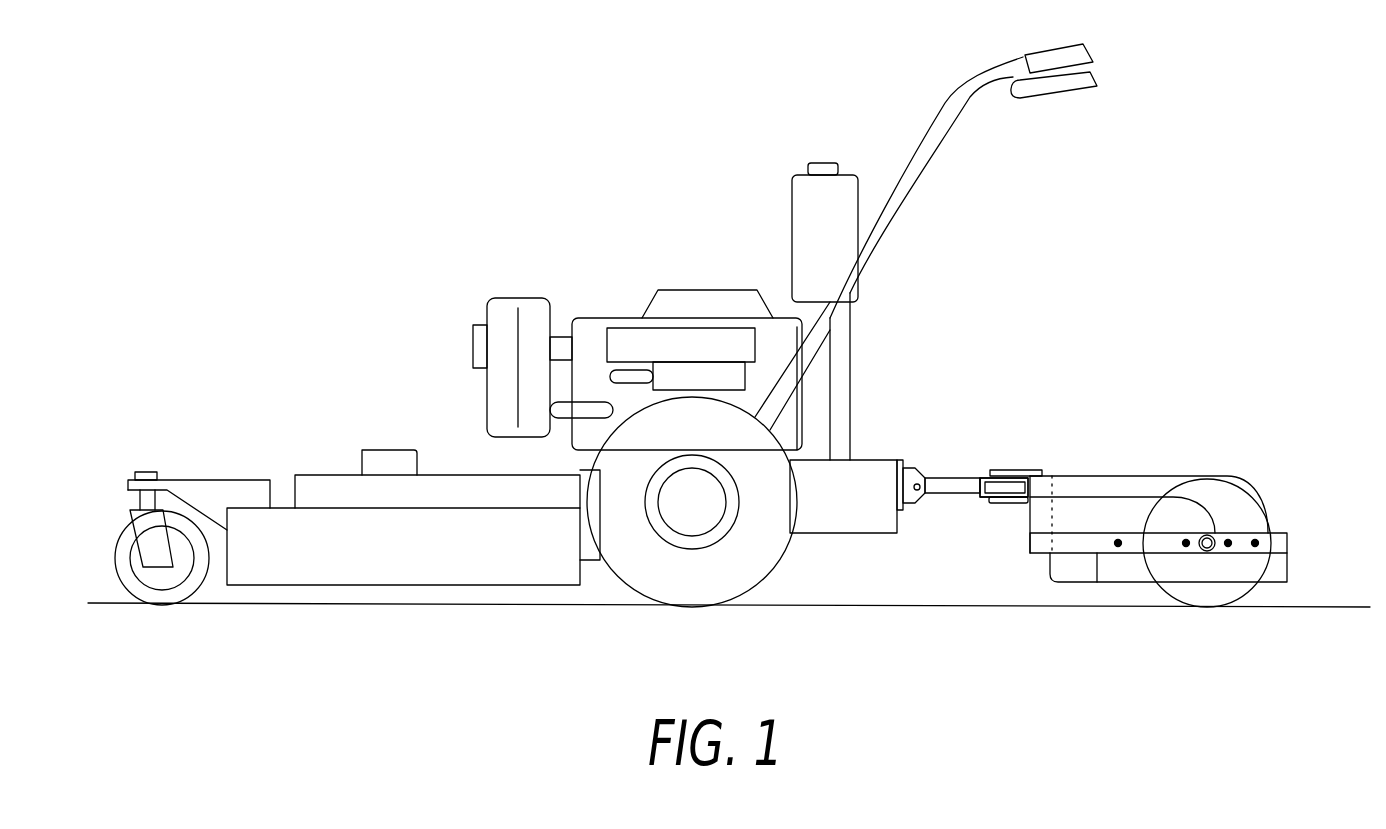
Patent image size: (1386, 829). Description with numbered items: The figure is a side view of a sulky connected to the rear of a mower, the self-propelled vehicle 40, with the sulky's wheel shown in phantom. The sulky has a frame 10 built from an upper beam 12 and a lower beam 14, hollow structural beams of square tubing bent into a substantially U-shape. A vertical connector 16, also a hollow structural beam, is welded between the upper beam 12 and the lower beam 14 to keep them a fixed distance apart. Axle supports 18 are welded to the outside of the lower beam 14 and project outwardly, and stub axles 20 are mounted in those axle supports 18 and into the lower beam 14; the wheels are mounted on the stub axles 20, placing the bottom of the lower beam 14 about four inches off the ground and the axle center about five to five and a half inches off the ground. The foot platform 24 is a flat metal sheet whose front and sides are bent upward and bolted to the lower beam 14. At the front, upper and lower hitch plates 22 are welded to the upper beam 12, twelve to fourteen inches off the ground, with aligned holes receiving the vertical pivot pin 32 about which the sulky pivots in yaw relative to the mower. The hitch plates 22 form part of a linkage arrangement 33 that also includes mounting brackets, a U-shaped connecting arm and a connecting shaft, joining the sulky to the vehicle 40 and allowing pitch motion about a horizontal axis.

The vehicle 40 is at (671, 198).
The linkage arrangement 33 is at (941, 420).
The pivot pin 32 is at (1000, 470).
The upper and lower hitch plates 22 is at (1020, 470).
The frame 10 is at (1113, 453).
The upper beam 12 is at (1157, 487).
The vertical connector 16 is at (1040, 508).
The lower beam 14 is at (1070, 545).
The foot platform 24 is at (1122, 570).
The stub axles 20 is at (1212, 555).
The axle supports 18 is at (1218, 532).